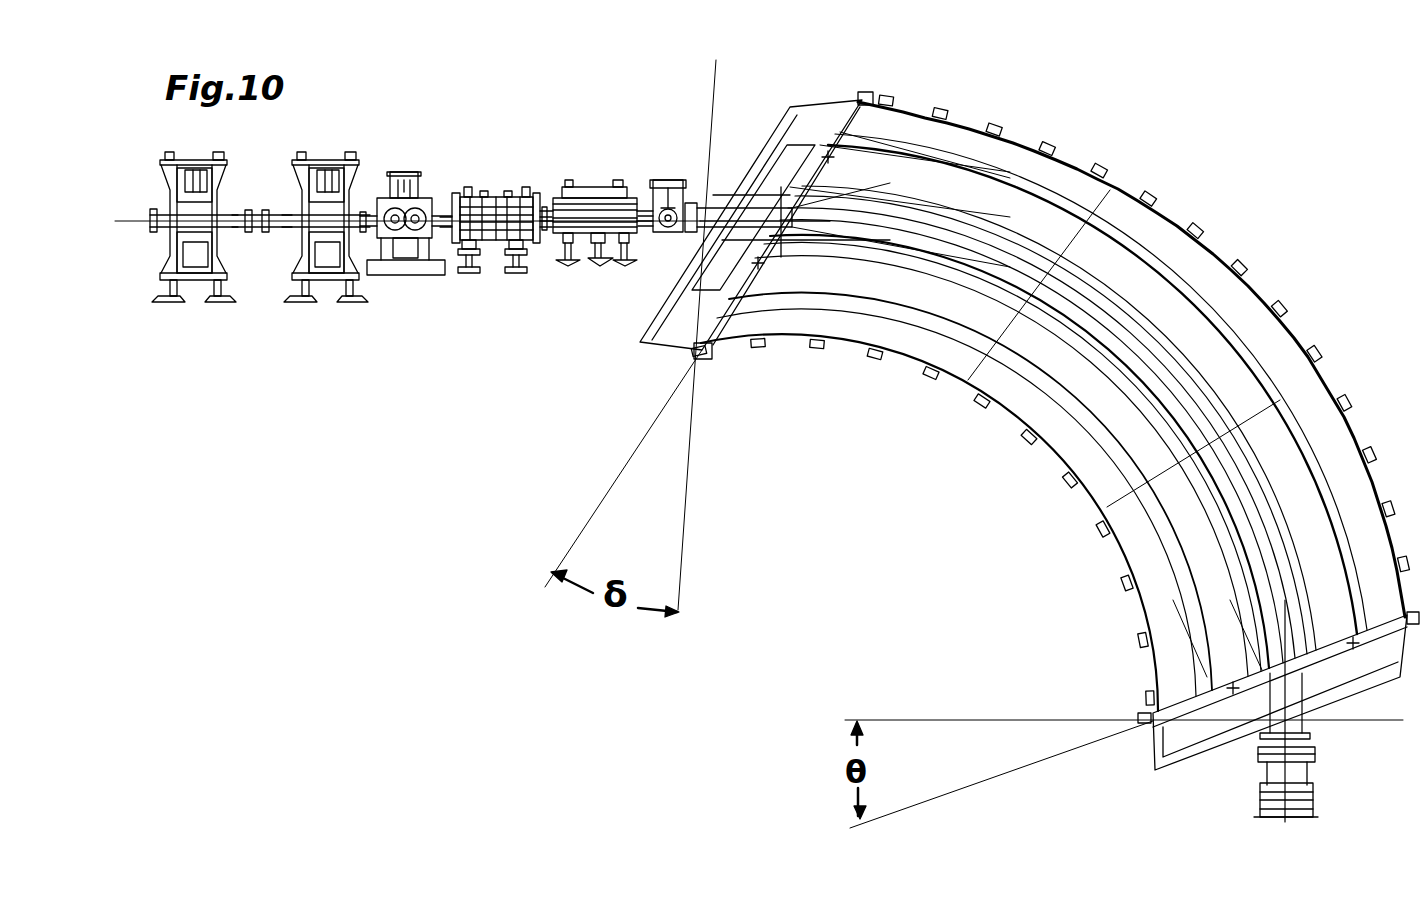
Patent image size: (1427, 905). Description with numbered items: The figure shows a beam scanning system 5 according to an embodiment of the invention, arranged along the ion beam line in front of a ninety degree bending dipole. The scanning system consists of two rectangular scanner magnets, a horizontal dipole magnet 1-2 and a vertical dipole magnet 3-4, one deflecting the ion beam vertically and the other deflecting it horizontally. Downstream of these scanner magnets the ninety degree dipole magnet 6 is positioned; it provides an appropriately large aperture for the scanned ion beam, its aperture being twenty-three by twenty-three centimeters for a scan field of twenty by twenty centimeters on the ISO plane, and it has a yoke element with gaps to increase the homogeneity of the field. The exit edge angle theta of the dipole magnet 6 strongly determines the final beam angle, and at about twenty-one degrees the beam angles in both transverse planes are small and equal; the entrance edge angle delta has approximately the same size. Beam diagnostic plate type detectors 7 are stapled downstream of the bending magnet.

The horizontal dipole scanner magnet 1-2 is at (493, 200).
The vertical dipole scanner magnet 3-4 is at (590, 203).
The beam scanning system 5 is at (1029, 431).
The 90 degree dipole magnet 6 is at (946, 355).
The beam diagnostic plate type detectors 7 is at (1262, 800).